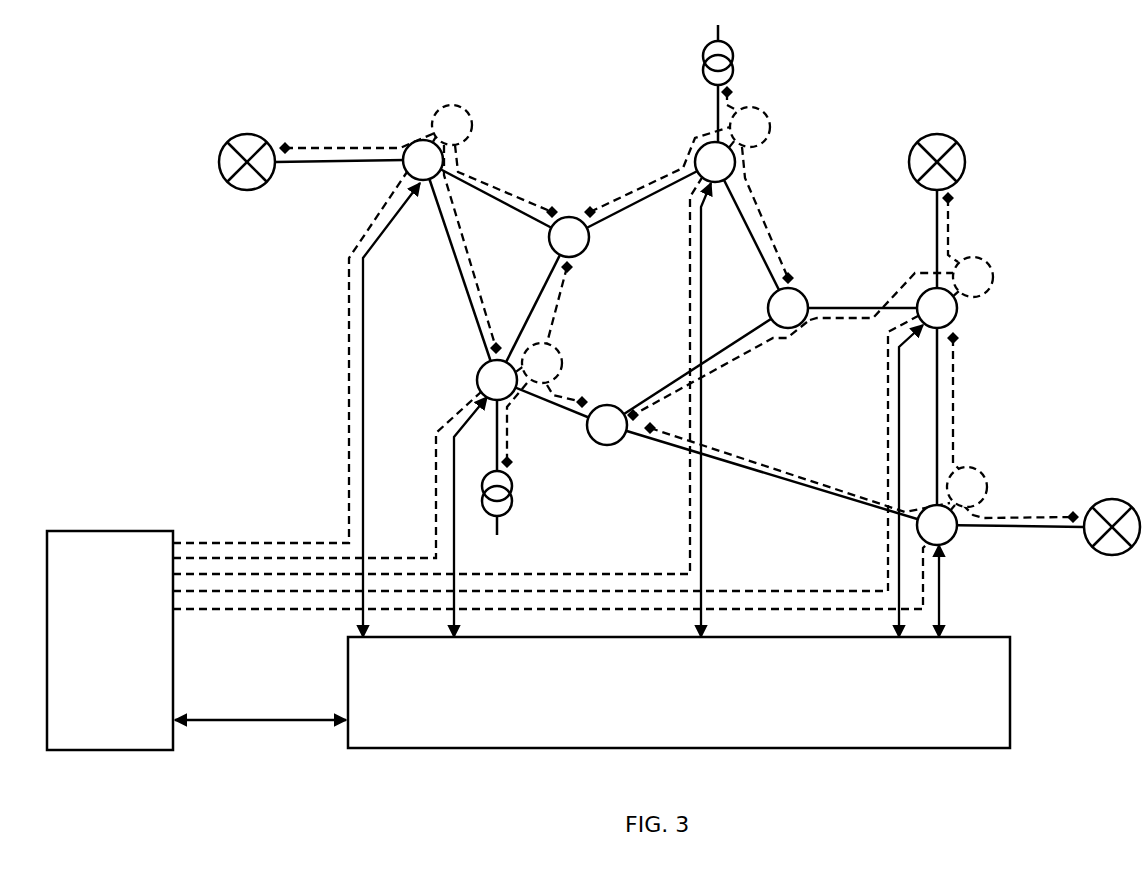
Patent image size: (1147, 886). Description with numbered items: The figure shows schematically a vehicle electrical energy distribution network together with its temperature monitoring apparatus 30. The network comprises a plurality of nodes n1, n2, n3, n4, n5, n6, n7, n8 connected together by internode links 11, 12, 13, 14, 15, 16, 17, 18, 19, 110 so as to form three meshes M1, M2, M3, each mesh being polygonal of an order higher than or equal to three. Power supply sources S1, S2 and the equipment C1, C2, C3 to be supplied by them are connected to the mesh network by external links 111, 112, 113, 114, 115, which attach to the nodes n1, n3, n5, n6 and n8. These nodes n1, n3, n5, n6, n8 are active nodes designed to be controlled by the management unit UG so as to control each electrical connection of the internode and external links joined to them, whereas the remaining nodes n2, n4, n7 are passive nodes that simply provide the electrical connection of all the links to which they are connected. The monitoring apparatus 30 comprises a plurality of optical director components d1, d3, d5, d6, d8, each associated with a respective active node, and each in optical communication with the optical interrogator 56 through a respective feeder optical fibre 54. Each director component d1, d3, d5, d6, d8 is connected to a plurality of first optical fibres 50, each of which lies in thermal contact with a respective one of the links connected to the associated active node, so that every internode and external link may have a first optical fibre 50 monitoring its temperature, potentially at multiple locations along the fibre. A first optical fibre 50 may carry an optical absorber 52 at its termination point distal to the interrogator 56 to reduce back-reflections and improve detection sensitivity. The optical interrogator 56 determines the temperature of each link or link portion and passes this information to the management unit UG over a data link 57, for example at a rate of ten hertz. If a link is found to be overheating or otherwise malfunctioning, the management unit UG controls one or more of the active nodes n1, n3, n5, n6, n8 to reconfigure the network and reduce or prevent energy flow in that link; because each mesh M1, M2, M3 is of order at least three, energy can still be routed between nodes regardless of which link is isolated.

The internode link 11 is at (496, 198).
The internode link 12 is at (533, 308).
The internode link 13 is at (459, 270).
The internode link 14 is at (642, 201).
The internode link 15 is at (751, 235).
The internode link 16 is at (697, 366).
The internode link 17 is at (552, 411).
The internode link 18 is at (862, 295).
The internode link 19 is at (921, 416).
The internode link 110 is at (772, 475).
The external link 111 is at (340, 176).
The external link 112 is at (696, 93).
The external link 113 is at (917, 249).
The external link 114 is at (1010, 543).
The external link 115 is at (477, 457).
The electrical energy distribution network temperature monitoring apparatus 30 is at (203, 302).
The first optical fibre 50 is at (679, 313).
The optical absorber 52 is at (287, 146).
The feeder optical fibre 54 is at (556, 405).
The optical interrogator 56 is at (110, 640).
The data link 57 is at (260, 705).
The active node n1 is at (406, 168).
The passive node n2 is at (569, 237).
The active node n3 is at (703, 178).
The passive node n4 is at (788, 308).
The active node n5 is at (954, 320).
The active node n6 is at (480, 370).
The passive node n7 is at (607, 425).
The active node n8 is at (953, 538).
The optical director component d1 is at (452, 125).
The optical director component d3 is at (750, 127).
The optical director component d5 is at (973, 277).
The optical director component d6 is at (542, 363).
The optical director component d8 is at (967, 487).
The equipment C1 is at (247, 147).
The equipment C2 is at (937, 146).
The equipment C3 is at (1112, 513).
The power supply source S1 is at (737, 63).
The power supply source S2 is at (513, 493).
The mesh M1 is at (508, 265).
The mesh M2 is at (644, 310).
The mesh M3 is at (819, 405).
The management unit UG is at (679, 692).